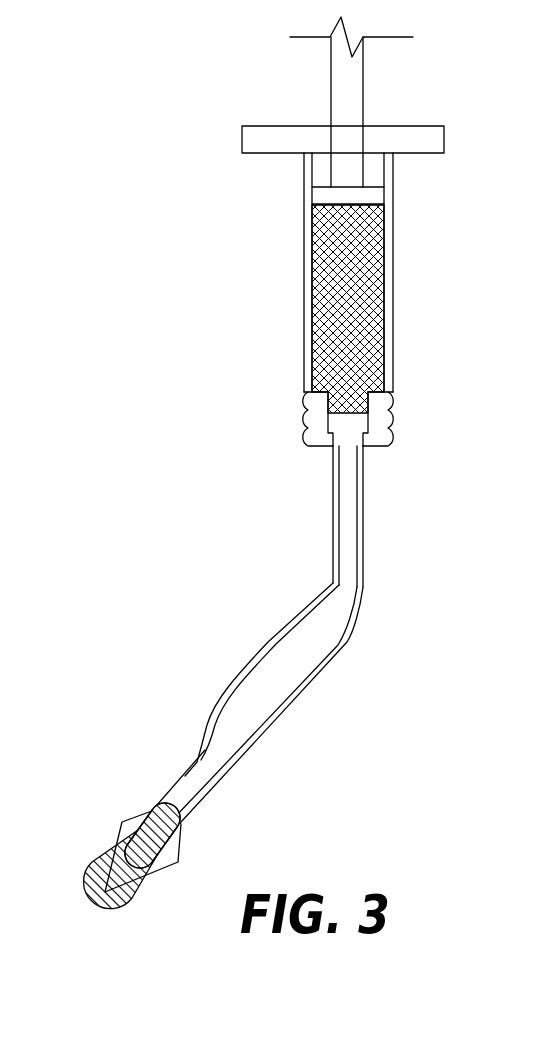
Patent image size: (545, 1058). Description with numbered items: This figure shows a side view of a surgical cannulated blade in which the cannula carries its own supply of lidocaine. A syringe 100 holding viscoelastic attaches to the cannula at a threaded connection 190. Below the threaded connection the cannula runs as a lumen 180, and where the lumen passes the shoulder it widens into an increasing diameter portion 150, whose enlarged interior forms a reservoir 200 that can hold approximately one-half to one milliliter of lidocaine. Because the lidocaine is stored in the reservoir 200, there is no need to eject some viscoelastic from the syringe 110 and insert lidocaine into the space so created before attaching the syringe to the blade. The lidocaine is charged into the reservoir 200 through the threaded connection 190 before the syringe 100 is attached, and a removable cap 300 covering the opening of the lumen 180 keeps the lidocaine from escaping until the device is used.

The syringe 100 is at (377, 253).
The syringe 110 is at (178, 866).
The increasing diameter portion 150 is at (205, 747).
The lumen 180 is at (200, 802).
The threaded connection 190 is at (386, 437).
The reservoir 200 is at (297, 693).
The removable cap 300 is at (86, 846).